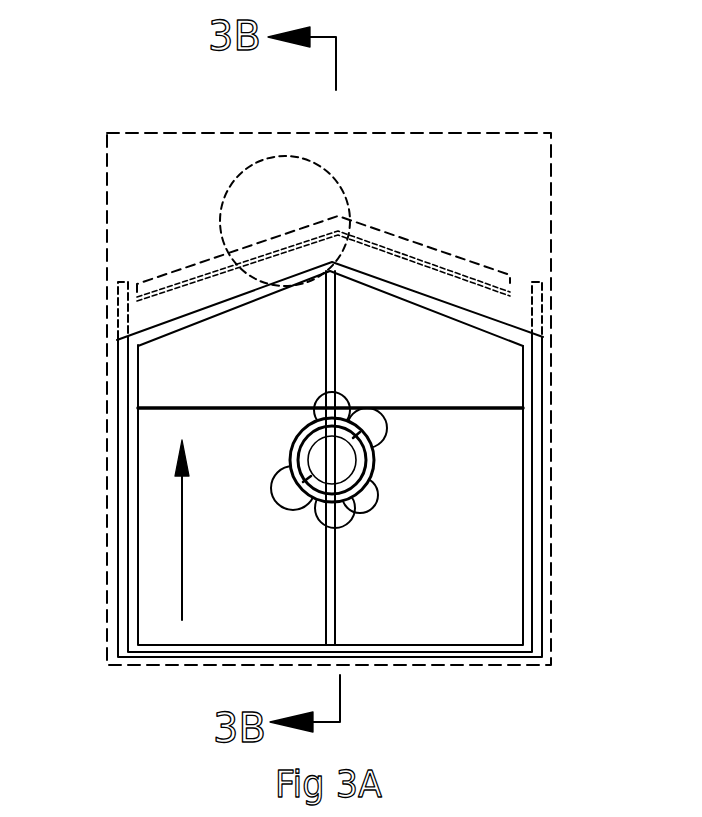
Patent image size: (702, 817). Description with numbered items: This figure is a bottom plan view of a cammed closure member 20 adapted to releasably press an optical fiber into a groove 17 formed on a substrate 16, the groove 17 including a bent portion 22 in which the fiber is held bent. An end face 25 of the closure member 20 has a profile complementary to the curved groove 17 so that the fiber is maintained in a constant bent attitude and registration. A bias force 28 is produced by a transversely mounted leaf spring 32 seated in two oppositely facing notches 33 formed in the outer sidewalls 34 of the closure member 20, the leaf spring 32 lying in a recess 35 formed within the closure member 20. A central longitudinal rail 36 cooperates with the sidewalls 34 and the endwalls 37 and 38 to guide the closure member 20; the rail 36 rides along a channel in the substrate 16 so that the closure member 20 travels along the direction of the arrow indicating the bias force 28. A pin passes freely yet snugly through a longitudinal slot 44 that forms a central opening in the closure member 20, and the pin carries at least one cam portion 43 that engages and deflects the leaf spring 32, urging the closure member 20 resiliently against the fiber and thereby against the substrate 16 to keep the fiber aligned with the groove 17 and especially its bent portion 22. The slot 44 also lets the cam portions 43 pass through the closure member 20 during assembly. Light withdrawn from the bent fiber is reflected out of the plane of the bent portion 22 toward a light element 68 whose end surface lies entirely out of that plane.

The substrate 16 is at (520, 133).
The groove 17 is at (430, 252).
The closure member 20 is at (477, 680).
The bent portion 22 is at (345, 252).
The end face 25 is at (482, 318).
The bias force 28 is at (183, 557).
The leaf spring 32 is at (390, 405).
The notches 33 is at (137, 408).
The outer sidewalls 34 is at (138, 476).
The recess 35 is at (161, 377).
The central longitudinal rail 36 is at (327, 329).
The endwall 37 is at (249, 645).
The endwall 38 is at (178, 336).
The cam portion 43 is at (300, 507).
The longitudinal slot 44 is at (366, 520).
The light element 68 is at (297, 157).